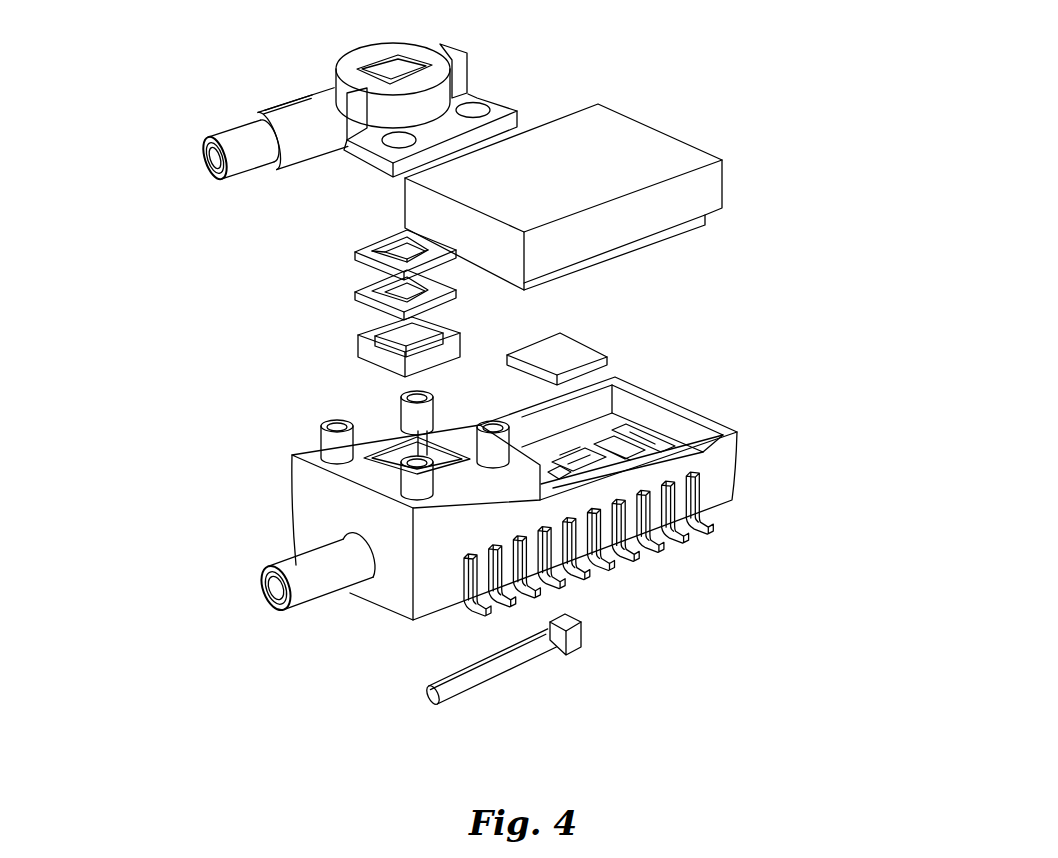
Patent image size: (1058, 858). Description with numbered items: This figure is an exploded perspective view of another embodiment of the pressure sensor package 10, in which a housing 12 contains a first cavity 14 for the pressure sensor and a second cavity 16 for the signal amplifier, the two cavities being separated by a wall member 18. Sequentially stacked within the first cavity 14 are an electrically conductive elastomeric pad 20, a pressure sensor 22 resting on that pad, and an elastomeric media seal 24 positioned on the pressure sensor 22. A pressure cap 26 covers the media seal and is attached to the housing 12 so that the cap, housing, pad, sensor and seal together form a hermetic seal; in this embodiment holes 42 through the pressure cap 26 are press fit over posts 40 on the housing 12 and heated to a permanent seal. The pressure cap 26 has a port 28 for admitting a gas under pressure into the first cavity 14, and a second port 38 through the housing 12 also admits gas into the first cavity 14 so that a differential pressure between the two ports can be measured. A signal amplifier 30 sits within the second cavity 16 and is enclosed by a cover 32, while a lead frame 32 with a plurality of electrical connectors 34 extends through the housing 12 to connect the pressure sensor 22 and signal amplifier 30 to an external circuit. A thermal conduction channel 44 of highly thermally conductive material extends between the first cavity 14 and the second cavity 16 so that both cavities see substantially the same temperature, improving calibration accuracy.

The sensor package 10 is at (832, 228).
The housing 12 is at (740, 460).
The first cavity 14 is at (386, 462).
The second cavity 16 is at (630, 437).
The wall member 18 is at (452, 437).
The electrically conductive elastomeric pad 20 is at (360, 337).
The pressure sensor 22 is at (360, 293).
The elastomeric media seal 24 is at (358, 252).
The pressure cap 26 is at (375, 60).
The port 28 is at (215, 140).
The signal amplifier 30 is at (562, 353).
The cover / lead frame 32 is at (617, 146).
The electrical connectors 34 is at (643, 570).
The second port 38 is at (331, 575).
The posts 40 is at (416, 484).
The holes 42 is at (490, 103).
The thermal conduction channel 44 is at (510, 680).